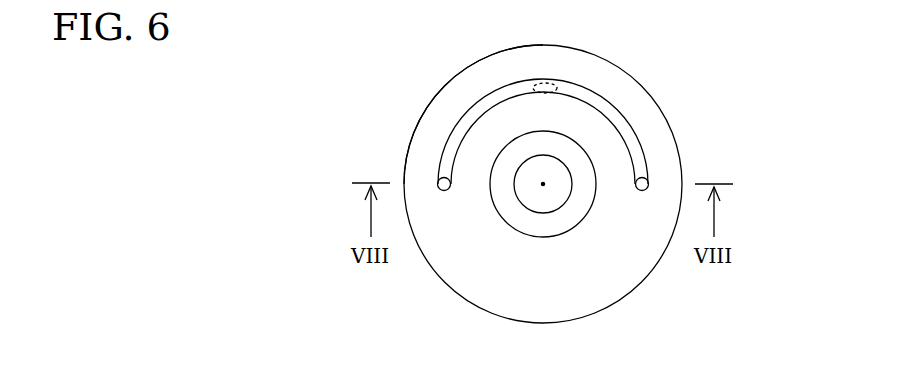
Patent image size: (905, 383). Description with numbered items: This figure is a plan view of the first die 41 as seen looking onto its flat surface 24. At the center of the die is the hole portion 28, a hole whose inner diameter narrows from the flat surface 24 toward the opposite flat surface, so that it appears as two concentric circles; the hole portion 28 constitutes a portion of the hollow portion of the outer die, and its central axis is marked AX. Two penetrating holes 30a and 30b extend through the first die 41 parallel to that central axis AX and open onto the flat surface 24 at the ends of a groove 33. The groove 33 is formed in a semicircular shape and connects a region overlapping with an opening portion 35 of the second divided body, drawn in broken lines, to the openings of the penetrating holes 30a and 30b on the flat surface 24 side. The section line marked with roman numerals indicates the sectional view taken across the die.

The flat surface 24 is at (612, 287).
The first die 41 is at (408, 65).
The groove 33 is at (622, 127).
The penetrating hole 30a is at (648, 183).
The penetrating hole 30b is at (437, 182).
The opening portion 35 is at (560, 88).
The hole portion 28 is at (527, 197).
The axis AX is at (541, 190).